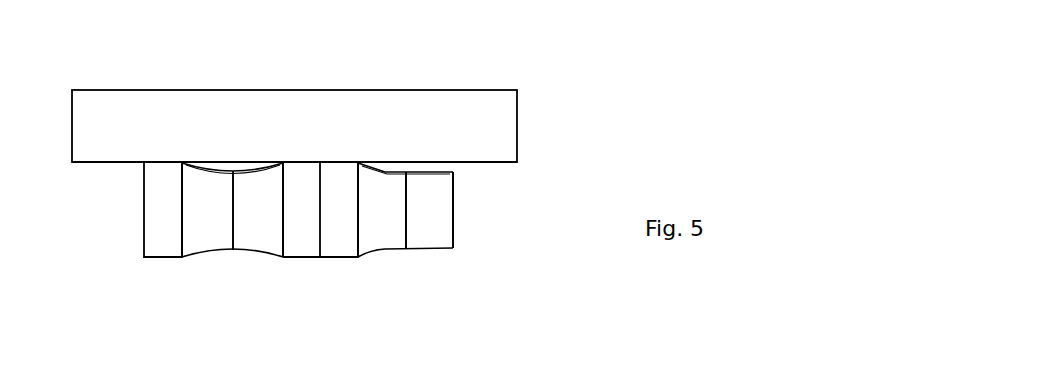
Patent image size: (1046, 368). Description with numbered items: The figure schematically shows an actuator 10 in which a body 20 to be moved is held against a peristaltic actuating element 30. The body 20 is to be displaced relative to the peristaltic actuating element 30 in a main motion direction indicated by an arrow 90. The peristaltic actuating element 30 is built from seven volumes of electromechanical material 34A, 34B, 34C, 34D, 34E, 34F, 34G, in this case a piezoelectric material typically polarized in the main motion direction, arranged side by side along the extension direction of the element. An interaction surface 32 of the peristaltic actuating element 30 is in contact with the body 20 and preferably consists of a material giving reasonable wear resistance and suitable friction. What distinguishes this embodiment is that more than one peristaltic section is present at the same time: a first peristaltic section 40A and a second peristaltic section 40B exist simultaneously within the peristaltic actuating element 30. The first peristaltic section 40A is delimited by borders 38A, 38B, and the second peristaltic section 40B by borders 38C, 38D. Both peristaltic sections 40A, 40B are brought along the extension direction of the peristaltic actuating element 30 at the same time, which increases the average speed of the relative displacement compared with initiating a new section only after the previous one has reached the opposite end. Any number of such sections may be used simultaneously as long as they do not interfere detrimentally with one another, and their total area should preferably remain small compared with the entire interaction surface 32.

The assembly 10 is at (538, 87).
The body 20 is at (158, 93).
The peristaltic actuating element 30 is at (510, 222).
The interaction surface 32 is at (330, 161).
The volume of electromechanical material 34A is at (155, 218).
The volume of electromechanical material 34B is at (205, 175).
The volume of electromechanical material 34C is at (260, 177).
The volume of electromechanical material 34D is at (293, 242).
The volume of electromechanical material 34E is at (345, 250).
The volume of electromechanical material 34F is at (382, 173).
The volume of electromechanical material 34G is at (428, 173).
The border 38A is at (178, 250).
The border 38B is at (283, 250).
The border 38C is at (362, 255).
The border 38D is at (455, 232).
The first peristaltic section 40A is at (227, 238).
The second peristaltic section 40B is at (423, 243).
The arrow 90 is at (617, 167).